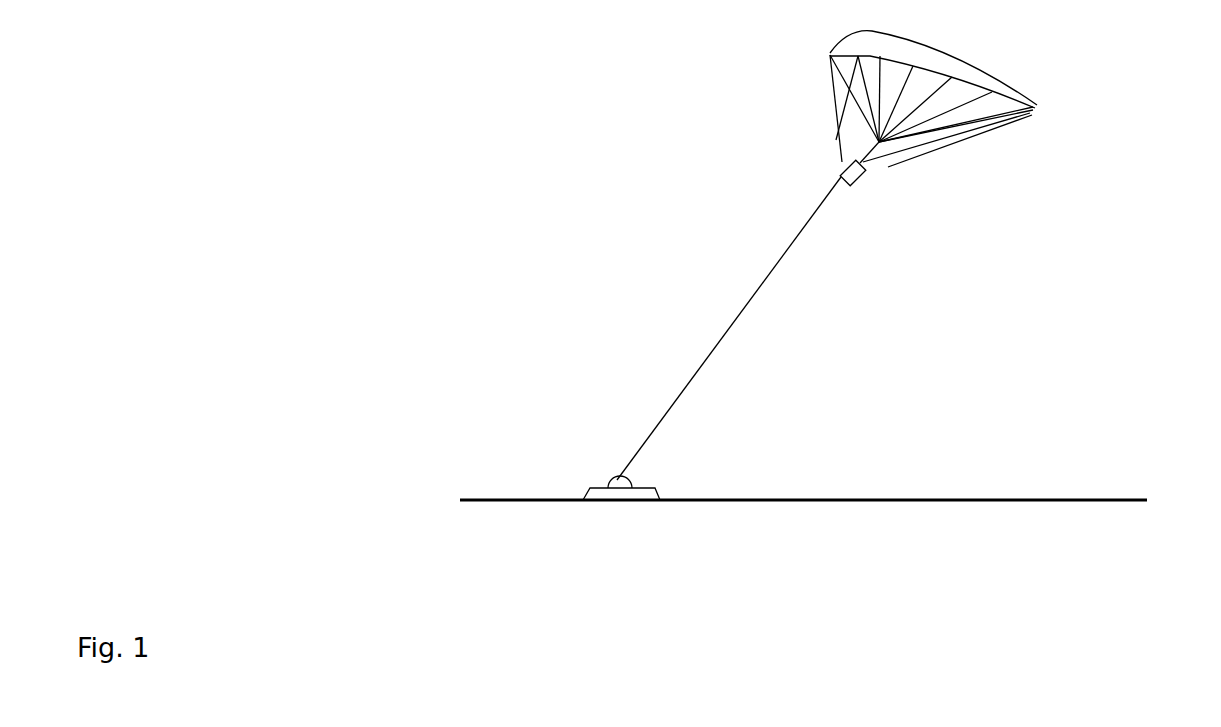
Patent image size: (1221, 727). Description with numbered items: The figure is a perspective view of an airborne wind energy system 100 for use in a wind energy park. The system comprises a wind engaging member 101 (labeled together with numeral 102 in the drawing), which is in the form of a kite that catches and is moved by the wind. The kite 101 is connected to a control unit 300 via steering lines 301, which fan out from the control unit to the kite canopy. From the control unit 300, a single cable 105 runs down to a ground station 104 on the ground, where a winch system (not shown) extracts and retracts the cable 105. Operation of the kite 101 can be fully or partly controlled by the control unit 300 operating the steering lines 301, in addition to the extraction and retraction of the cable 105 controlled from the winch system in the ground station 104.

The airborne wind energy system 100 is at (537, 280).
The wind engaging member 101 is at (931, 130).
The wing 102 is at (931, 130).
The ground station 104 is at (612, 485).
The cable 105 is at (710, 363).
The control unit 300 is at (855, 183).
The steering lines 301 is at (843, 108).